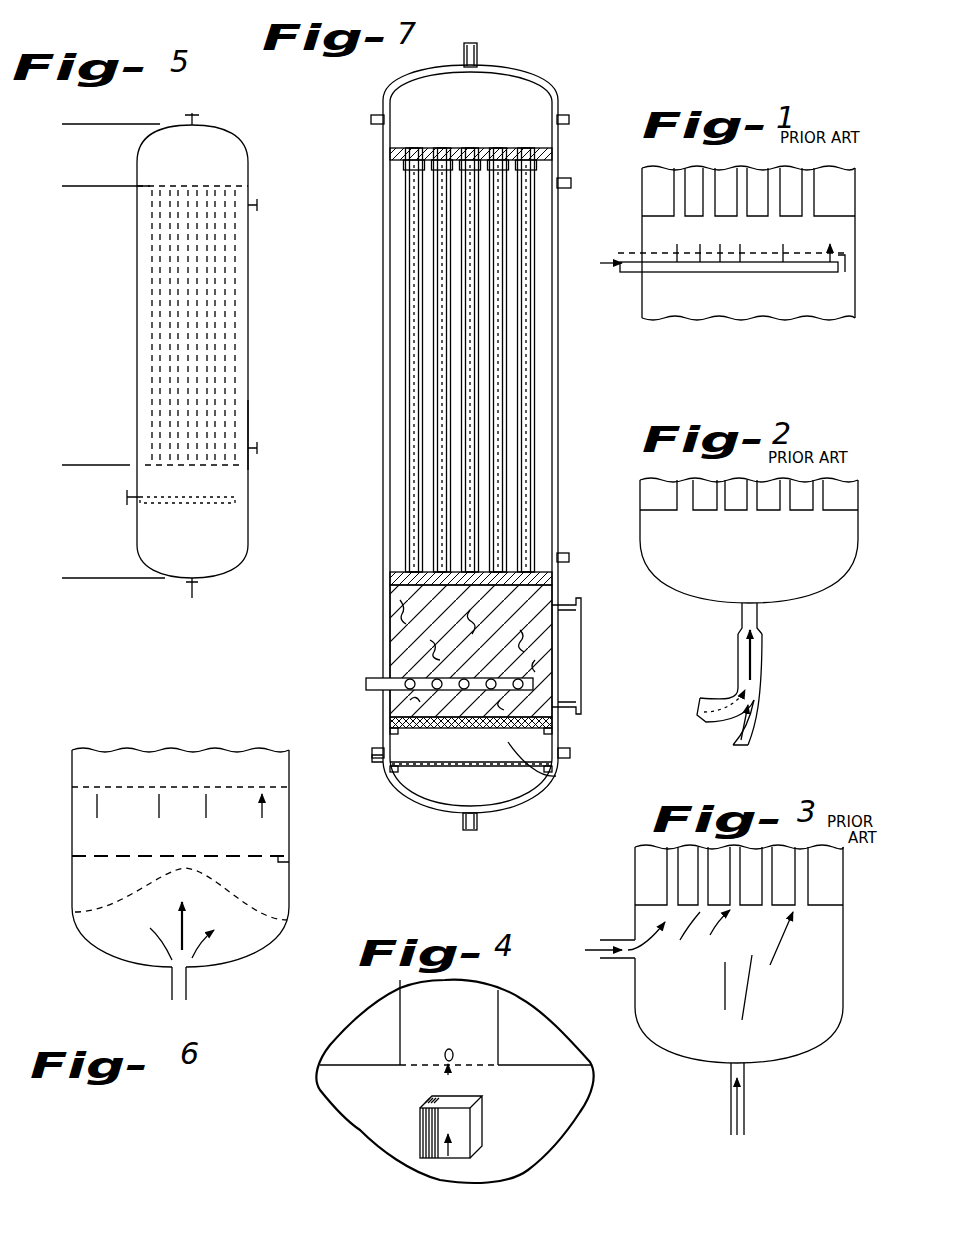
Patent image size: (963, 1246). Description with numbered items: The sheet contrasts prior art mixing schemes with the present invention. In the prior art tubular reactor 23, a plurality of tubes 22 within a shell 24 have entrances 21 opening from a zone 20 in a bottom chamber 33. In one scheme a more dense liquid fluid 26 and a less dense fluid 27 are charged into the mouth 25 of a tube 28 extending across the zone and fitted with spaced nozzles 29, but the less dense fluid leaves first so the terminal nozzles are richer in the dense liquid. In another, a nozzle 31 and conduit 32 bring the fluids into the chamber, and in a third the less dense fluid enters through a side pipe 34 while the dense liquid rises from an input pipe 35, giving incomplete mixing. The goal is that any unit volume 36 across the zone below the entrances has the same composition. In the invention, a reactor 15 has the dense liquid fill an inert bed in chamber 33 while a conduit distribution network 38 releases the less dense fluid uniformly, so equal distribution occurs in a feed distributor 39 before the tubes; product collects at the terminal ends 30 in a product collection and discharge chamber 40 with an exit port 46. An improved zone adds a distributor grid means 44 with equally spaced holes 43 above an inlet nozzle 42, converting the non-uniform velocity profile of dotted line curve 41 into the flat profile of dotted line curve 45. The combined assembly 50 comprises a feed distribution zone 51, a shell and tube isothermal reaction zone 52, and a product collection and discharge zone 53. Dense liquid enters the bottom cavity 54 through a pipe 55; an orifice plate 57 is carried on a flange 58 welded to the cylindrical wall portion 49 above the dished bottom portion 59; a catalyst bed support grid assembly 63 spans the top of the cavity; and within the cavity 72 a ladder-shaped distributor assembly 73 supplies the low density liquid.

In FIG. 5, the reactor 15 is at (85, 459).
In FIG. 5, the zone 20 is at (236, 492).
In FIG. 1, the zone 20 is at (842, 227).
In FIG. 2, the zone 20 is at (850, 545).
In FIG. 3, the zone 20 is at (818, 912).
In FIG. 4, the zone 20 is at (530, 1162).
In FIG. 5, the entrances 21 is at (215, 468).
In FIG. 1, the entrances 21 is at (786, 220).
In FIG. 2, the entrances 21 is at (750, 512).
In FIG. 3, the entrances 21 is at (772, 910).
In FIG. 4, the entrances 21 is at (405, 1068).
In FIG. 5, the tubes 22 is at (212, 365).
In FIG. 1, the tubes 22 is at (736, 174).
In FIG. 2, the tubes 22 is at (790, 486).
In FIG. 3, the tubes 22 is at (770, 852).
In FIG. 4, the tubes 22 is at (410, 1024).
In FIG. 1, the tubular reactor 23 is at (638, 180).
In FIG. 2, the tubular reactor 23 is at (636, 494).
In FIG. 3, the tubular reactor 23 is at (632, 871).
In FIG. 5, the shell 24 is at (248, 290).
In FIG. 1, the shell 24 is at (642, 205).
In FIG. 2, the shell 24 is at (640, 505).
In FIG. 3, the shell 24 is at (636, 882).
In FIG. 1, the mouth 25 is at (618, 258).
In FIG. 5, the more dense liquid fluid 26 is at (192, 598).
In FIG. 1, the more dense liquid fluid 26 is at (824, 270).
In FIG. 2, the more dense liquid fluid 26 is at (752, 722).
In FIG. 3, the more dense liquid fluid 26 is at (745, 1112).
In FIG. 6, the more dense liquid fluid 26 is at (196, 958).
In FIG. 4, the more dense liquid fluid 26 is at (428, 1158).
In FIG. 5, the less dense fluid 27 is at (122, 492).
In FIG. 1, the less dense fluid 27 is at (644, 232).
In FIG. 2, the less dense fluid 27 is at (718, 672).
In FIG. 3, the less dense fluid 27 is at (590, 946).
In FIG. 4, the less dense fluid 27 is at (467, 1122).
In FIG. 1, the tube 28 is at (798, 274).
In FIG. 1, the nozzles 29 is at (822, 242).
In FIG. 5, the terminal ends 30 is at (218, 186).
In FIG. 2, the nozzle 31 is at (758, 612).
In FIG. 2, the inlet conduit 32 is at (763, 655).
In FIG. 5, the chamber 33 is at (240, 548).
In FIG. 1, the chamber 33 is at (688, 318).
In FIG. 2, the chamber 33 is at (700, 585).
In FIG. 3, the chamber 33 is at (648, 1007).
In FIG. 6, the chamber 33 is at (82, 882).
In FIG. 3, the pipe 34 is at (616, 962).
In FIG. 3, the input pipe 35 is at (730, 1078).
In FIG. 4, the unit volume 36 is at (464, 1162).
In FIG. 5, the conduit distribution network 38 is at (168, 503).
In FIG. 5, the feed distributor 39 is at (85, 471).
In FIG. 5, the product collection and discharge chamber 40 is at (85, 130).
In FIG. 6, the dotted line curve 41 is at (228, 912).
In FIG. 6, the inlet nozzle 42 is at (172, 978).
In FIG. 6, the holes 43 is at (234, 855).
In FIG. 6, the distributor grid means 44 is at (286, 860).
In FIG. 6, the dotted line curve 45 is at (275, 792).
In FIG. 5, the exit port 46 is at (199, 117).
In FIG. 7, the cylindrical wall portion 49 is at (380, 764).
In FIG. 7, the assembly 50 is at (537, 66).
In FIG. 7, the feed distribution zone 51 is at (354, 600).
In FIG. 7, the shell and tube isothermal reaction zone 52 is at (354, 165).
In FIG. 7, the product collection and discharge zone 53 is at (354, 58).
In FIG. 7, the bottom cavity 54 is at (515, 790).
In FIG. 7, the pipe 55 is at (478, 828).
In FIG. 7, the orifice plate 57 is at (566, 752).
In FIG. 7, the flange 58 is at (548, 768).
In FIG. 7, the dished bottom portion 59 is at (432, 815).
In FIG. 7, the catalyst bed support grid assembly 63 is at (554, 722).
In FIG. 7, the cavity 72 is at (581, 662).
In FIG. 7, the distributor assembly 73 is at (440, 678).